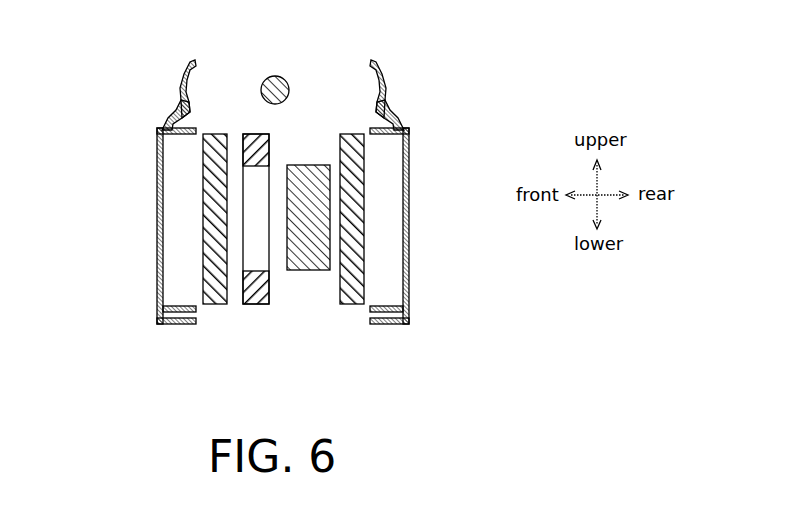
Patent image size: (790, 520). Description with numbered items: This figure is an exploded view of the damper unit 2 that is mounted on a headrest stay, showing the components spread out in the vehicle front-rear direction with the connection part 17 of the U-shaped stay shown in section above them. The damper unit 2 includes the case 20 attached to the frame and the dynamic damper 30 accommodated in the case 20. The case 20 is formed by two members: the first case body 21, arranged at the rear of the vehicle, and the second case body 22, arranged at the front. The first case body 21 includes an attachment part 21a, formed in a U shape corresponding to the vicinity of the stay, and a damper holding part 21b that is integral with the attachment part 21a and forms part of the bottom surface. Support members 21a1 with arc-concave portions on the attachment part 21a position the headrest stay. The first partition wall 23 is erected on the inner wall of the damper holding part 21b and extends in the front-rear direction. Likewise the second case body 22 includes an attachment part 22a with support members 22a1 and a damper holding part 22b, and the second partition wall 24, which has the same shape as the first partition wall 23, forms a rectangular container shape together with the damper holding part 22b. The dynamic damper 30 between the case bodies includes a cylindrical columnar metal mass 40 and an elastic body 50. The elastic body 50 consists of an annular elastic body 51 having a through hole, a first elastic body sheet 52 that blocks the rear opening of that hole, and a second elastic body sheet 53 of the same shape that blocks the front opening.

The damper unit 2 is at (486, 72).
The connection part 17 is at (270, 77).
The case 20 is at (156, 185).
The first case body 21 is at (405, 298).
The attachment part 21a is at (383, 72).
The support member 21a1 is at (388, 108).
The damper holding part 21b is at (407, 282).
The second case body 22 is at (158, 300).
The attachment part 22a is at (183, 70).
The support member 22a1 is at (180, 110).
The damper holding part 22b is at (157, 285).
The first partition wall 23 is at (396, 118).
The second partition wall 24 is at (168, 122).
The dynamic damper 30 is at (367, 207).
The mass 40 is at (312, 164).
The elastic body 50 is at (349, 384).
The annular elastic body 51 is at (255, 305).
The first elastic body sheet 52 is at (347, 305).
The second elastic body sheet 53 is at (215, 305).